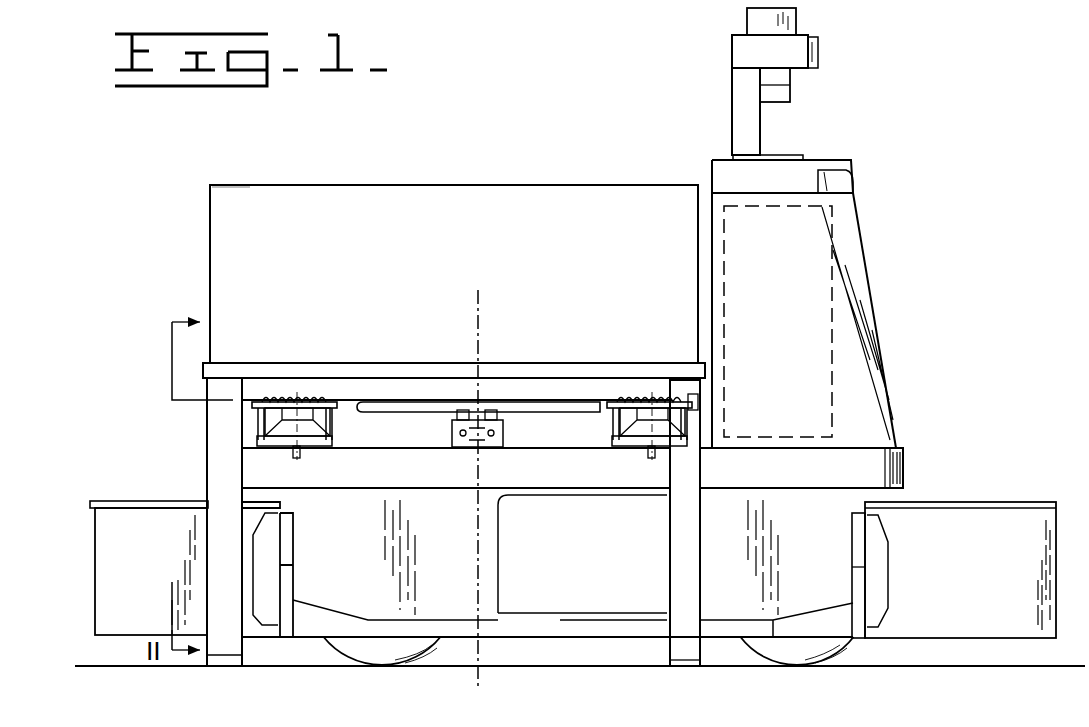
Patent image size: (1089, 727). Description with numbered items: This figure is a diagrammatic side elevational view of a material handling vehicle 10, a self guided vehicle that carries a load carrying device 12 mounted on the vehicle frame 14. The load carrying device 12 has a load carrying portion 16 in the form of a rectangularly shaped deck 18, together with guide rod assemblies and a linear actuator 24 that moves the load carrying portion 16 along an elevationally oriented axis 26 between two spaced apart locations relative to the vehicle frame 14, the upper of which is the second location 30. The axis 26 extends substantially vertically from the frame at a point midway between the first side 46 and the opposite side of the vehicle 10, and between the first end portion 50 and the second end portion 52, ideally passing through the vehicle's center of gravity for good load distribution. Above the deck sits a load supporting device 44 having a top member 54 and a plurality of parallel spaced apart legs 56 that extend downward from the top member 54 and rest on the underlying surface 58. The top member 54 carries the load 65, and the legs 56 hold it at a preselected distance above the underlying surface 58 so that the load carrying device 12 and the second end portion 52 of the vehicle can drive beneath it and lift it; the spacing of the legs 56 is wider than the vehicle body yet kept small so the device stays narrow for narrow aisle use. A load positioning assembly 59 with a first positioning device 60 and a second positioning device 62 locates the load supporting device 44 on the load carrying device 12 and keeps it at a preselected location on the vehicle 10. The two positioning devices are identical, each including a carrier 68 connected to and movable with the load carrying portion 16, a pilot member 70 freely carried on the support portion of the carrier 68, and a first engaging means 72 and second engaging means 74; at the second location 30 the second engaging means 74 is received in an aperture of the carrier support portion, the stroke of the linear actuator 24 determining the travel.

The material handling vehicle 10 is at (910, 96).
The load carrying device 12 is at (543, 388).
The vehicle frame 14 is at (913, 470).
The load carrying portion 16 is at (288, 384).
The deck 18 is at (417, 400).
The linear actuator 24 is at (494, 460).
The axis 26 is at (482, 298).
The second location 30 is at (191, 400).
The load supporting device 44 is at (712, 372).
The first side 46 is at (466, 555).
The first end portion 50 is at (893, 452).
The second end portion 52 is at (253, 465).
The top member 54 is at (502, 370).
The legs 56 is at (215, 487).
The underlying surface 58 is at (890, 666).
The load positioning assembly 59 is at (411, 285).
The first positioning device 60 is at (608, 455).
The second positioning device 62 is at (334, 455).
The load 65 is at (462, 228).
The carrier 68 is at (343, 428).
The pilot member 70 is at (277, 415).
The first engaging means 72 is at (262, 392).
The second engaging means 74 is at (301, 460).